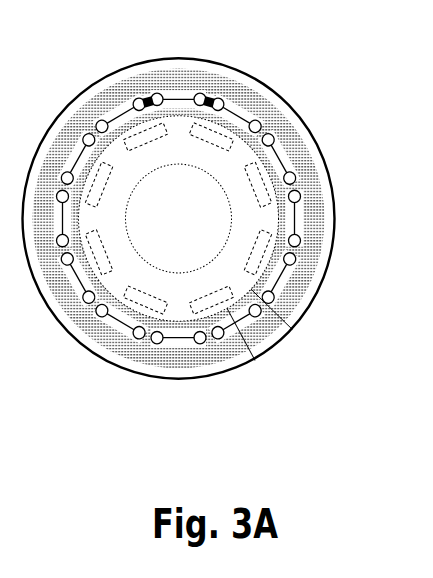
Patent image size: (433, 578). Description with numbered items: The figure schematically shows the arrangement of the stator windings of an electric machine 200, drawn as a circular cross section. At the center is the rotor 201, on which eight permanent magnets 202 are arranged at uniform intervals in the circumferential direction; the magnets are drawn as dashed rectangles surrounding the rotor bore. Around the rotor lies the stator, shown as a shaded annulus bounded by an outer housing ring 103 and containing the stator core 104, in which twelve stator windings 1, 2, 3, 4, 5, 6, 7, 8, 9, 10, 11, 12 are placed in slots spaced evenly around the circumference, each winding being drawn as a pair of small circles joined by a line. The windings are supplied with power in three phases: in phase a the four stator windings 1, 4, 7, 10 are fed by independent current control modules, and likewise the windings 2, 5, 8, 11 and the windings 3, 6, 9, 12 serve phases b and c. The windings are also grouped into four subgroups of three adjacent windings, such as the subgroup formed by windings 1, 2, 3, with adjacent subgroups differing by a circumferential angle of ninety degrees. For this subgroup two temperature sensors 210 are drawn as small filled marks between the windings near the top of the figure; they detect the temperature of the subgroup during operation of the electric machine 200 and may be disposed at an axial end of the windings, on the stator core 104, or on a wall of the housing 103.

The electric machine 200 is at (161, 22).
The temperature sensor 210 is at (206, 64).
The stator core 104 is at (275, 99).
The housing 103 is at (330, 173).
The rotor 201 is at (293, 329).
The permanent magnet 202 is at (255, 360).
The stator winding 1 is at (279, 158).
The stator winding 2 is at (237, 115).
The stator winding 3 is at (178, 98).
The stator winding 4 is at (121, 115).
The stator winding 5 is at (78, 158).
The stator winding 6 is at (62, 218).
The stator winding 7 is at (78, 278).
The stator winding 8 is at (121, 321).
The stator winding 9 is at (178, 340).
The stator winding 10 is at (237, 321).
The stator winding 11 is at (279, 278).
The stator winding 12 is at (297, 218).